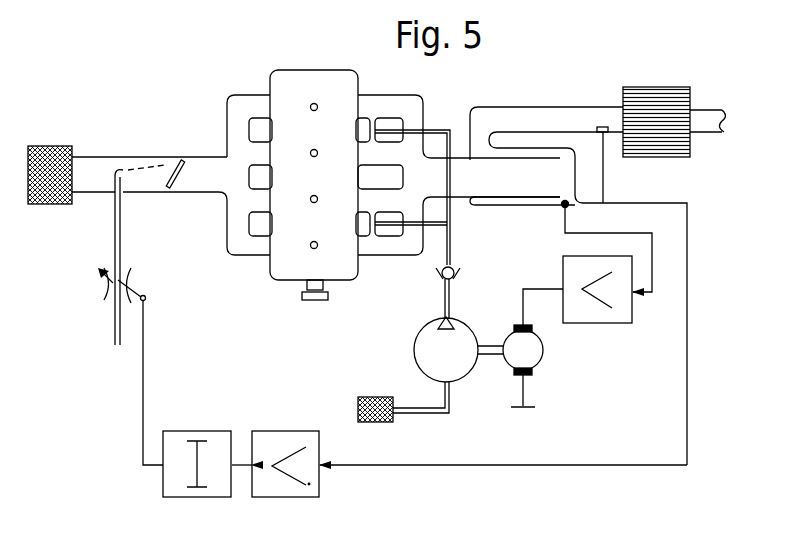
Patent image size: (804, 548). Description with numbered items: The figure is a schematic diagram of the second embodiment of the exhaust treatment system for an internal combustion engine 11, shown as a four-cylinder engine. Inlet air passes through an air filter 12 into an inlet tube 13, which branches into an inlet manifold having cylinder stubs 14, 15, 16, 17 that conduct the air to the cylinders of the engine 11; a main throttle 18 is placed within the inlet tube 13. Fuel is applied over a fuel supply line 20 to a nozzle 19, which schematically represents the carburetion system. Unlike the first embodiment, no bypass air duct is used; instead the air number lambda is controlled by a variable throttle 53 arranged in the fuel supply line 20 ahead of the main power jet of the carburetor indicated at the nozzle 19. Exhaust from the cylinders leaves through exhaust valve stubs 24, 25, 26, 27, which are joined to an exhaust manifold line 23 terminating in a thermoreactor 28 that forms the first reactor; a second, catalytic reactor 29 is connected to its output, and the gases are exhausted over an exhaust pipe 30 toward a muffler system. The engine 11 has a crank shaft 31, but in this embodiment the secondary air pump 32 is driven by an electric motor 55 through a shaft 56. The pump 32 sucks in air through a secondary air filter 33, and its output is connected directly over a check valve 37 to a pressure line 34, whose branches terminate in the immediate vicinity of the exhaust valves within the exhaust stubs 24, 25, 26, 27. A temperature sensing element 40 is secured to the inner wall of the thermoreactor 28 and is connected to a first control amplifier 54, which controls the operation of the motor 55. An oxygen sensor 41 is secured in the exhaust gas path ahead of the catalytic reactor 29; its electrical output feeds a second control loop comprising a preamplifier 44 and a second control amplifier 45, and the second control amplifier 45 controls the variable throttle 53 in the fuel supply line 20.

The internal combustion engine 11 is at (322, 78).
The air filter 12 is at (44, 202).
The inlet tube 13 is at (80, 158).
The cylinder stub 14 is at (253, 102).
The cylinder stub 15 is at (257, 152).
The cylinder stub 16 is at (257, 198).
The cylinder stub 17 is at (262, 252).
The throttle 18 is at (174, 189).
The nozzle 19 is at (125, 170).
The fuel supply line 20 is at (116, 332).
The exhaust manifold line 23 is at (460, 167).
The exhaust valve stub 24 is at (377, 100).
The exhaust valve stub 25 is at (364, 152).
The exhaust valve stub 26 is at (396, 197).
The exhaust valve stub 27 is at (384, 252).
The thermoreactor 28 is at (574, 192).
The second reactor 29 is at (643, 96).
The exhaust pipe 30 is at (704, 113).
The crank shaft 31 is at (323, 284).
The secondary air pump 32 is at (418, 344).
The secondary air filter 33 is at (375, 397).
The pressure line 34 is at (452, 252).
The check valve 37 is at (465, 266).
The temperature sensing element 40 is at (563, 209).
The oxygen sensor 41 is at (606, 136).
The preamplifier 44 is at (288, 436).
The second control amplifier 45 is at (199, 431).
The variable throttle 53 is at (106, 292).
The first control amplifier 54 is at (608, 315).
The electric motor 55 is at (540, 352).
The shaft 56 is at (496, 345).